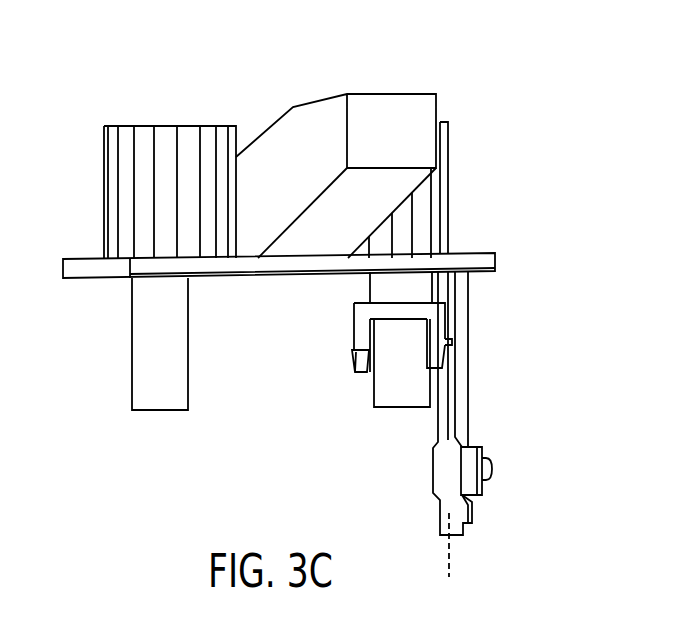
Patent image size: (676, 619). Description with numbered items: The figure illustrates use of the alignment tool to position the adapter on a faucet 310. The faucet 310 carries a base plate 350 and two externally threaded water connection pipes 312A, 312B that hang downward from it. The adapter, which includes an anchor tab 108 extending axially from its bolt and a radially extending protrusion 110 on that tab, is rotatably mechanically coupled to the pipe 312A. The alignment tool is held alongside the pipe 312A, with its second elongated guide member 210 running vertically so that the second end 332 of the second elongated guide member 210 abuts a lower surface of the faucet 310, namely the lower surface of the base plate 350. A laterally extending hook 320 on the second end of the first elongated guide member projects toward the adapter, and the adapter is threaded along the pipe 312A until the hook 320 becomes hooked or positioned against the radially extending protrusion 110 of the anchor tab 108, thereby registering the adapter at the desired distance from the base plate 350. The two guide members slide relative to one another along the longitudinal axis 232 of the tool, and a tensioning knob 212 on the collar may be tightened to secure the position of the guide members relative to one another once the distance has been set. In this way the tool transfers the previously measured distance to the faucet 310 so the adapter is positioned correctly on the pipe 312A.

The faucet 310 is at (462, 105).
The base plate 350 is at (478, 260).
The second end of the second elongated guide member 332 is at (460, 272).
The second elongated guide member 210 is at (452, 327).
The laterally extending hook 320 is at (452, 341).
The anchor tab 108 is at (362, 320).
The radially extending protrusion 110 is at (355, 363).
The externally threaded water connection pipe 312A is at (388, 388).
The externally threaded water connection pipe 312B is at (165, 397).
The tensioning knob 212 is at (492, 469).
The longitudinal axis 232 is at (451, 549).